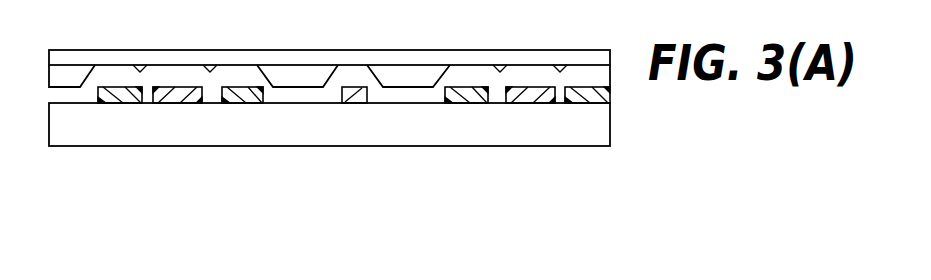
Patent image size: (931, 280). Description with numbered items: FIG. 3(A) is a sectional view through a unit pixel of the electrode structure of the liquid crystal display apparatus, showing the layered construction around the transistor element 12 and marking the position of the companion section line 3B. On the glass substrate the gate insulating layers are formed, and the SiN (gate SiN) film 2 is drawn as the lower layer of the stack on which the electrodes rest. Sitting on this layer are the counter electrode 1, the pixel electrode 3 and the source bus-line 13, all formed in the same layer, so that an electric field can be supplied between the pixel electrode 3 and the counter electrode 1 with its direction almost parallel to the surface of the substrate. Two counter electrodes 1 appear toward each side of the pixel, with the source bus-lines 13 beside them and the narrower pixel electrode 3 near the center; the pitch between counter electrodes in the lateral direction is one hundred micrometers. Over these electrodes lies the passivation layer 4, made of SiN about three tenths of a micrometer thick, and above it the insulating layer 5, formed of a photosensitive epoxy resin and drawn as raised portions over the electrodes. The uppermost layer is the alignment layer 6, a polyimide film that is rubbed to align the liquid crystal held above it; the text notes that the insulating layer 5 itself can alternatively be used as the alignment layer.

The counter electrode 1 is at (243, 105).
The SiN (gate SiN) film 2 is at (322, 135).
The pixel electrode 3 is at (362, 87).
The passivation layer 4 is at (248, 73).
The insulating layer 5 is at (303, 73).
The alignment layer 6 is at (83, 60).
The transistor element 12 is at (339, 0).
The source bus-line 13 is at (178, 92).
The section line 3B is at (417, 11).